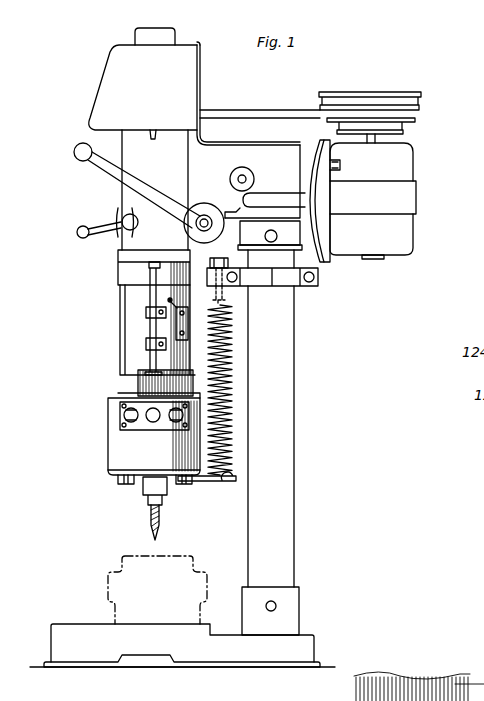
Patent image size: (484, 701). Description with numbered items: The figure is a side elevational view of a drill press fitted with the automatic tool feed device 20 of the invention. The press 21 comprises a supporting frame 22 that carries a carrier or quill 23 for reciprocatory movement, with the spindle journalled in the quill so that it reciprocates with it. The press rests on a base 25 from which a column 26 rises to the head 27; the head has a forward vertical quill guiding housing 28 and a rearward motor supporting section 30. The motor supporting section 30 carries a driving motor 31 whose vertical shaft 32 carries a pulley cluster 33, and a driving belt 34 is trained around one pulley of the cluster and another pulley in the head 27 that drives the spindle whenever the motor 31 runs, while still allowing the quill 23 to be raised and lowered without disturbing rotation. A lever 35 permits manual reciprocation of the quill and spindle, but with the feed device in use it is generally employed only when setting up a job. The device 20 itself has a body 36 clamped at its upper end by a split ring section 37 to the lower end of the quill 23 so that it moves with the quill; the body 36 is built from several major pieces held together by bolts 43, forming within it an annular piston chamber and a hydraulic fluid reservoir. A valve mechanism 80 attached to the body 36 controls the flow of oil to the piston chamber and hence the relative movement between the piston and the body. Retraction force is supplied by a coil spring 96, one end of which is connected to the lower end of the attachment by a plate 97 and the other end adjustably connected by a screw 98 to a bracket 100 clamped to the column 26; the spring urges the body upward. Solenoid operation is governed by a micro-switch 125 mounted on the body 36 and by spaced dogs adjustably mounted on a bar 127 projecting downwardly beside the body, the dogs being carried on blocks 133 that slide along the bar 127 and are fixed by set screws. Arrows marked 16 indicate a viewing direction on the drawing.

The section line / direction arrows 16 is at (104, 295).
The tool feed device 20 is at (118, 376).
The press 21 is at (296, 421).
The supporting frame 22 is at (297, 599).
The carrier or quill 23 is at (108, 453).
The base 25 is at (232, 655).
The column 26 is at (283, 486).
The head 27 is at (213, 177).
The quill guiding housing 28 is at (164, 172).
The motor supporting section 30 is at (318, 199).
The driving motor 31 is at (400, 167).
The vertical shaft 32 is at (377, 139).
The pulley cluster 33 is at (416, 103).
The driving belt 34 is at (249, 116).
The lever 35 is at (113, 172).
The body 36 is at (130, 351).
The split ring section 37 is at (125, 273).
The bolts 43 is at (124, 485).
The valve mechanism 80 is at (152, 428).
The coil spring 96 is at (226, 389).
The plate 97 is at (226, 486).
The screw 98 is at (224, 300).
The bracket 100 is at (292, 287).
The micro-switch 125 is at (188, 322).
The bar 127 is at (150, 321).
The blocks 133 is at (150, 345).